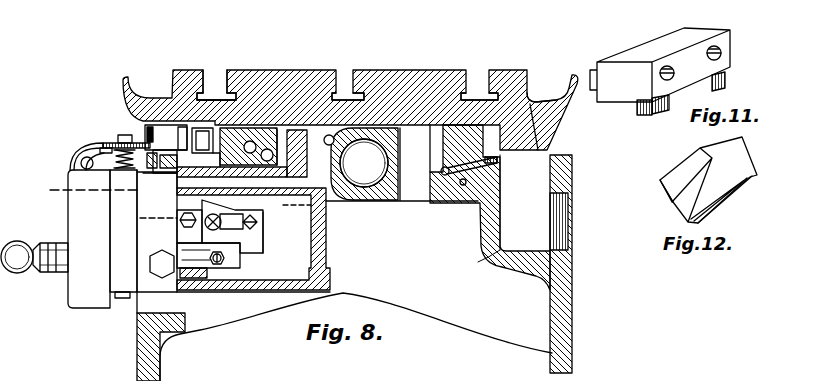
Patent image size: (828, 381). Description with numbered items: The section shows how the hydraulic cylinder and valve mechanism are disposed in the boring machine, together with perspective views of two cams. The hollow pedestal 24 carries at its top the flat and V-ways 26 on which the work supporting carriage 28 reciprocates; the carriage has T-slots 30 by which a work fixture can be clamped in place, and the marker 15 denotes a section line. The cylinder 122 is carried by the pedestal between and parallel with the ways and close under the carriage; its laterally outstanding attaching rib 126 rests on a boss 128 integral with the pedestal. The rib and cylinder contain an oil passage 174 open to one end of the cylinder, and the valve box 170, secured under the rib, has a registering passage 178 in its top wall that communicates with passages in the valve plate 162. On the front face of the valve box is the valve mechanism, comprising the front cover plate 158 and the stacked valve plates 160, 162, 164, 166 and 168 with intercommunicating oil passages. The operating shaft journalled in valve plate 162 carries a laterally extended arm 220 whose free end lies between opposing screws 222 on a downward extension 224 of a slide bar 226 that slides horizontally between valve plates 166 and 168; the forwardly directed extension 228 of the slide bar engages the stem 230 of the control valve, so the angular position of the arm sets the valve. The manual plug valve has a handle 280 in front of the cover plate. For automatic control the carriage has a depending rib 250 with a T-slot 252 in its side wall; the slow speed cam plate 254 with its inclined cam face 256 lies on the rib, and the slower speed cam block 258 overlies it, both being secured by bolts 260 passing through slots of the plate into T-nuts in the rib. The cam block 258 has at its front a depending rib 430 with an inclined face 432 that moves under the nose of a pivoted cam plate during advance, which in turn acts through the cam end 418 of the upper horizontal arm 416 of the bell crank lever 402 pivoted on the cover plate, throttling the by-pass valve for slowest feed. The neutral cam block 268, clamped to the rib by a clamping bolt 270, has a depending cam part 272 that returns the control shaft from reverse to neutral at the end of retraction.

In FIG. 8, the section line 15 is at (50, 191).
In FIG. 8, the pedestal 24 is at (572, 323).
In FIG. 8, the flat and V-ways 26 is at (290, 105).
In FIG. 8, the work supporting carriage 28 is at (393, 75).
In FIG. 8, the T-slots 30 is at (218, 90).
In FIG. 8, the cylinder 122 is at (373, 200).
In FIG. 8, the attaching rib 126 is at (297, 125).
In FIG. 8, the boss 128 is at (324, 202).
In FIG. 8, the cover plate 158 is at (78, 291).
In FIG. 8, the valve plate 160 is at (118, 276).
In FIG. 8, the valve plate 162 is at (147, 283).
In FIG. 8, the valve plate 164 is at (183, 234).
In FIG. 8, the valve plate 166 is at (217, 213).
In FIG. 8, the valve plate 168 is at (254, 248).
In FIG. 8, the valve box 170 is at (264, 292).
In FIG. 8, the oil passage 174 is at (318, 100).
In FIG. 8, the registering passage 178 is at (245, 100).
In FIG. 8, the arm 220 is at (180, 254).
In FIG. 8, the opposing screws 222 is at (216, 264).
In FIG. 8, the downward extension 224 is at (231, 262).
In FIG. 8, the slide bar 226 is at (294, 232).
In FIG. 8, the forwardly directed extension 228 is at (214, 230).
In FIG. 8, the stem 230 is at (200, 208).
In FIG. 8, the depending rib 250 is at (215, 92).
In FIG. 8, the T-slot 252 is at (193, 123).
In FIG. 8, the slow speed cam plate 254 is at (185, 97).
In FIG. 8, the cam face 256 is at (527, 0).
In FIG. 8, the slower speed cam block 258 is at (157, 130).
In FIG. 11, the slower speed cam block 258 is at (638, 48).
In FIG. 8, the bolts 260 is at (125, 135).
In FIG. 12, the neutral cam block 268 is at (718, 153).
In FIG. 12, the clamping bolt 270 is at (722, 203).
In FIG. 12, the depending cam part 272 is at (670, 190).
In FIG. 8, the handle 280 is at (17, 242).
In FIG. 8, the bell crank lever 402 is at (80, 163).
In FIG. 8, the upper horizontal arm 416 is at (100, 148).
In FIG. 8, the cam end 418 is at (100, 142).
In FIG. 11, the depending rib 430 is at (637, 108).
In FIG. 11, the inclined face 432 is at (654, 114).